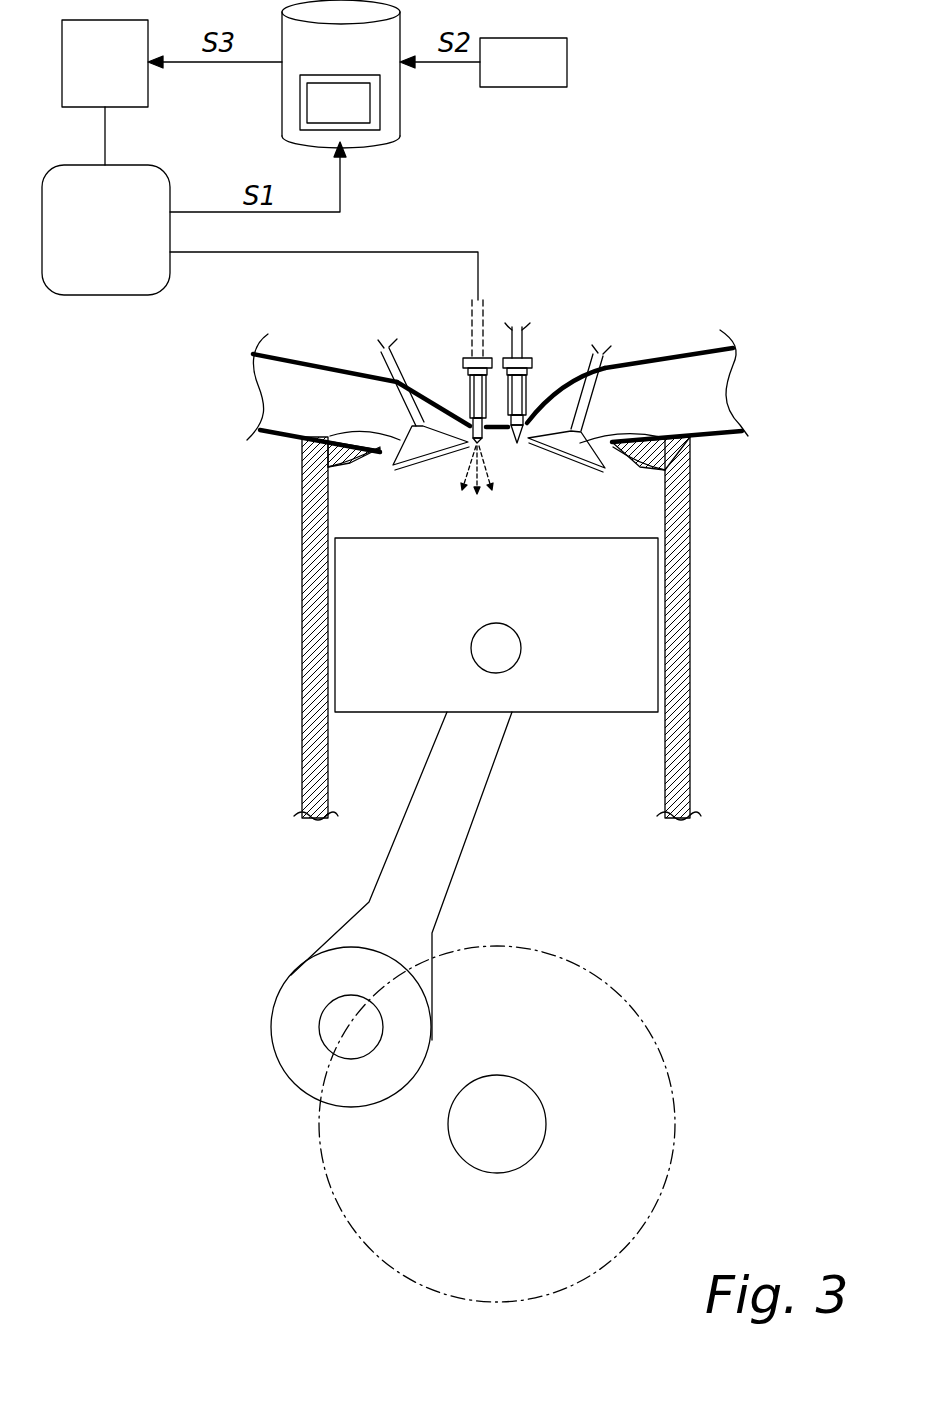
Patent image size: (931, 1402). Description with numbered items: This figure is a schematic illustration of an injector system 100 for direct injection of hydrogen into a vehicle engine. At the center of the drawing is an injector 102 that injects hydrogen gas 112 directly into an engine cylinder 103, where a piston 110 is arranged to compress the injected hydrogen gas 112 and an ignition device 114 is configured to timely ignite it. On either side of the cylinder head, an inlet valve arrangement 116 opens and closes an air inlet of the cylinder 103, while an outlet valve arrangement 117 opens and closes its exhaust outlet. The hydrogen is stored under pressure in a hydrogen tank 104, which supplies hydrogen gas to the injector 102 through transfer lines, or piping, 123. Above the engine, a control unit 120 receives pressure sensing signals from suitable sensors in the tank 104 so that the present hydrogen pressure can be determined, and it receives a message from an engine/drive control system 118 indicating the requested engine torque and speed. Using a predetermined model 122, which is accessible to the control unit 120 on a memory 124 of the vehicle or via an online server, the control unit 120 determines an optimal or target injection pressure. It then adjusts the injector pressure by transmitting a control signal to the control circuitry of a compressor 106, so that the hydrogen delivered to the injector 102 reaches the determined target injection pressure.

The injector system 100 is at (176, 545).
The injector 102 is at (467, 385).
The engine cylinder 103 is at (517, 529).
The hydrogen tank 104 is at (94, 296).
The compressor 106 is at (128, 78).
The piston 110 is at (521, 607).
The hydrogen gas 112 is at (448, 471).
The ignition device 114 is at (528, 392).
The inlet valve arrangement 116 is at (302, 437).
The outlet valve arrangement 117 is at (690, 487).
The engine/drive control system 118 is at (546, 78).
The control unit 120 is at (364, 64).
The model 122 is at (362, 119).
The transfer lines 123 is at (490, 242).
The memory 124 is at (381, 98).